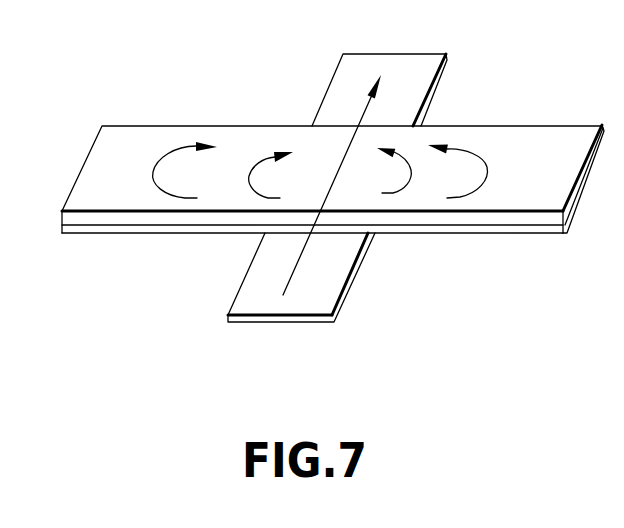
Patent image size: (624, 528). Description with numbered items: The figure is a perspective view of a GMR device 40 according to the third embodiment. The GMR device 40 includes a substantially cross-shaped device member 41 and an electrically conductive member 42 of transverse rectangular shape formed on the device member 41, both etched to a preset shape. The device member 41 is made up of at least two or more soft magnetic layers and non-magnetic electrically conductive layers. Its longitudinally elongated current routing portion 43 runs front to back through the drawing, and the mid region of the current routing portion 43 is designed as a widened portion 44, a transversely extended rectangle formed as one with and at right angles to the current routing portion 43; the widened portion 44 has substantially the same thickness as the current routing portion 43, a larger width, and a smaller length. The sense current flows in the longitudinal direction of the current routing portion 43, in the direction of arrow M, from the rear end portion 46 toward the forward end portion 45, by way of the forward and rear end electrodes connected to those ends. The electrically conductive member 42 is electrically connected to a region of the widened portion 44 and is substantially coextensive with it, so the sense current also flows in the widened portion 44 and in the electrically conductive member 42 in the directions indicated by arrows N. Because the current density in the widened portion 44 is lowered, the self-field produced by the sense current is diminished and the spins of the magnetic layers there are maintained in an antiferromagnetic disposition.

The GMR device 40 is at (200, 112).
The device member 41 is at (322, 76).
The electrically conductive member 42 is at (107, 157).
The current routing portion 43 is at (404, 107).
The widened portion 44 is at (120, 235).
The forward end portion 45 is at (422, 70).
The rear end portion 46 is at (318, 303).
The arrow M is at (300, 258).
The arrow N is at (183, 200).